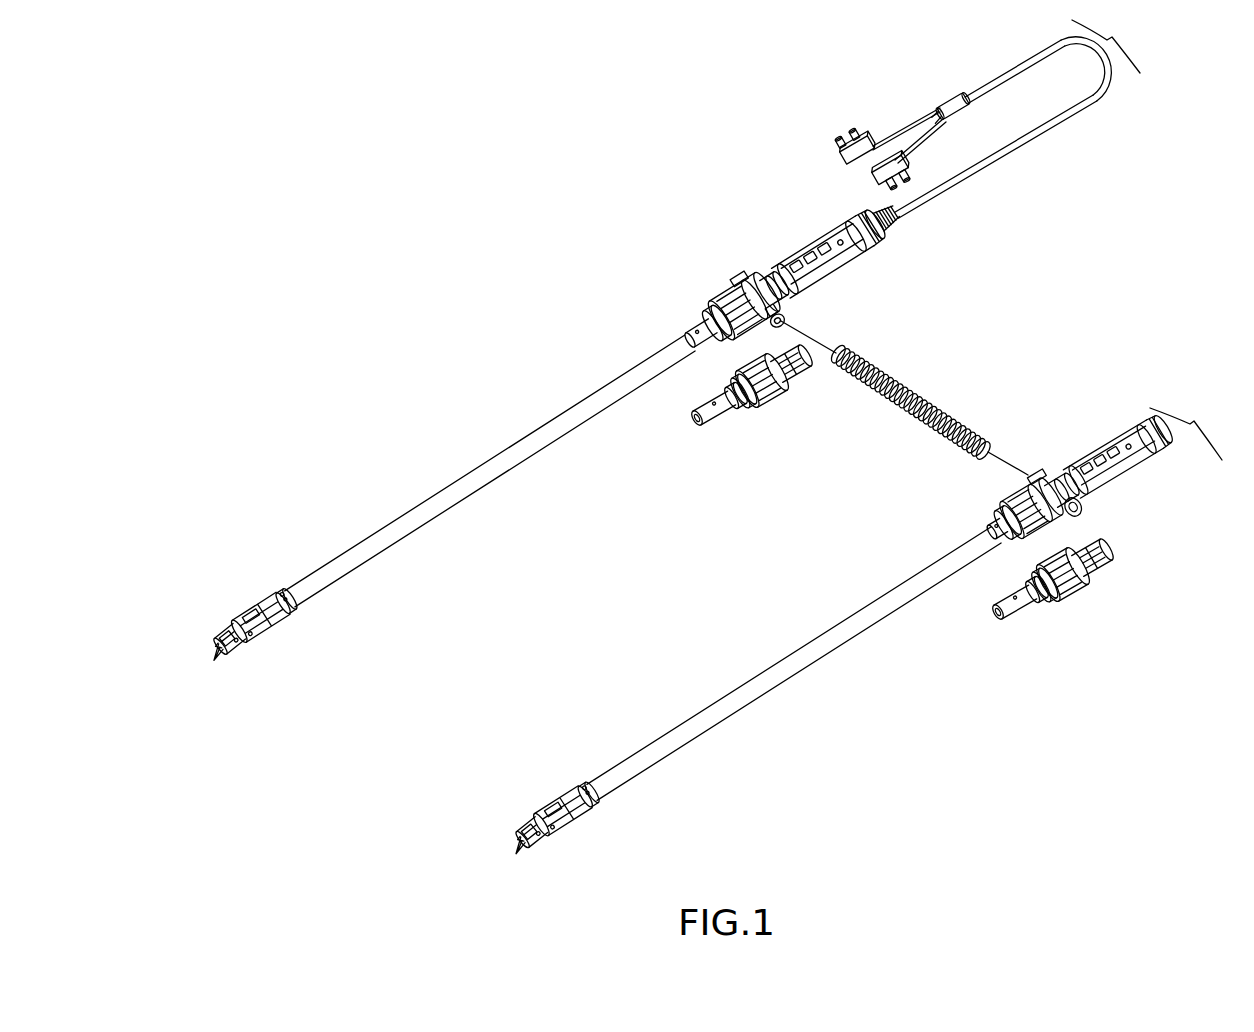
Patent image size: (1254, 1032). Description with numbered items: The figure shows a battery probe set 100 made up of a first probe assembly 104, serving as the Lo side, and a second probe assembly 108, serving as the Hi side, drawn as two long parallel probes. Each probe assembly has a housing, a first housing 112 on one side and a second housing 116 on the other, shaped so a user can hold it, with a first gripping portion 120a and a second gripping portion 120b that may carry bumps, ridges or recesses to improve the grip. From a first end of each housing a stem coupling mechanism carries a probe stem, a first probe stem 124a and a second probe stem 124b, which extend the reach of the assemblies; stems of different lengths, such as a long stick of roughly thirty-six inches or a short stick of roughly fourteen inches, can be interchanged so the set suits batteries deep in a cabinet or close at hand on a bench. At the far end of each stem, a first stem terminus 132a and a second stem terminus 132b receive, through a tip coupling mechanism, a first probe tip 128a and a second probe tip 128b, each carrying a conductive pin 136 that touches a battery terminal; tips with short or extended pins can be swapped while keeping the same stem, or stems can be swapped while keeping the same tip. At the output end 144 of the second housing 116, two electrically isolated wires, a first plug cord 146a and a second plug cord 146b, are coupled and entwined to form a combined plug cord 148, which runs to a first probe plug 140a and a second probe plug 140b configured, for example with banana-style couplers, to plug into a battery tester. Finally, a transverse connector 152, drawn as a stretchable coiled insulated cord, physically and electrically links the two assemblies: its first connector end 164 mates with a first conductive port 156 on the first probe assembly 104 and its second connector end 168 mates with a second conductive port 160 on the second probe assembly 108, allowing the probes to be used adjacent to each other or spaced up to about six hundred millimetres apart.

The battery probe set 100 is at (345, 103).
The first probe assembly 104 is at (824, 649).
The second probe assembly 108 is at (959, 116).
The first housing 112 is at (1000, 623).
The second housing 116 is at (687, 330).
The first gripping portion 120a is at (1081, 478).
The second gripping portion 120b is at (806, 278).
The first probe stem 124a is at (966, 582).
The second probe stem 124b is at (687, 396).
The first probe tip 128a is at (526, 837).
The second probe tip 128b is at (224, 643).
The first stem terminus 132a is at (593, 819).
The second stem terminus 132b is at (240, 601).
The conductive pin 136 is at (518, 845).
The first probe plug 140a is at (877, 178).
The second probe plug 140b is at (852, 133).
The output end 144 is at (872, 240).
The first plug cord 146a is at (913, 150).
The second plug cord 146b is at (893, 130).
The plug cord 148 is at (997, 153).
The transverse connector 152 is at (915, 379).
The first conductive port 156 is at (1050, 478).
The second conductive port 160 is at (779, 315).
The first connector end 164 is at (1036, 474).
The second connector end 168 is at (786, 322).